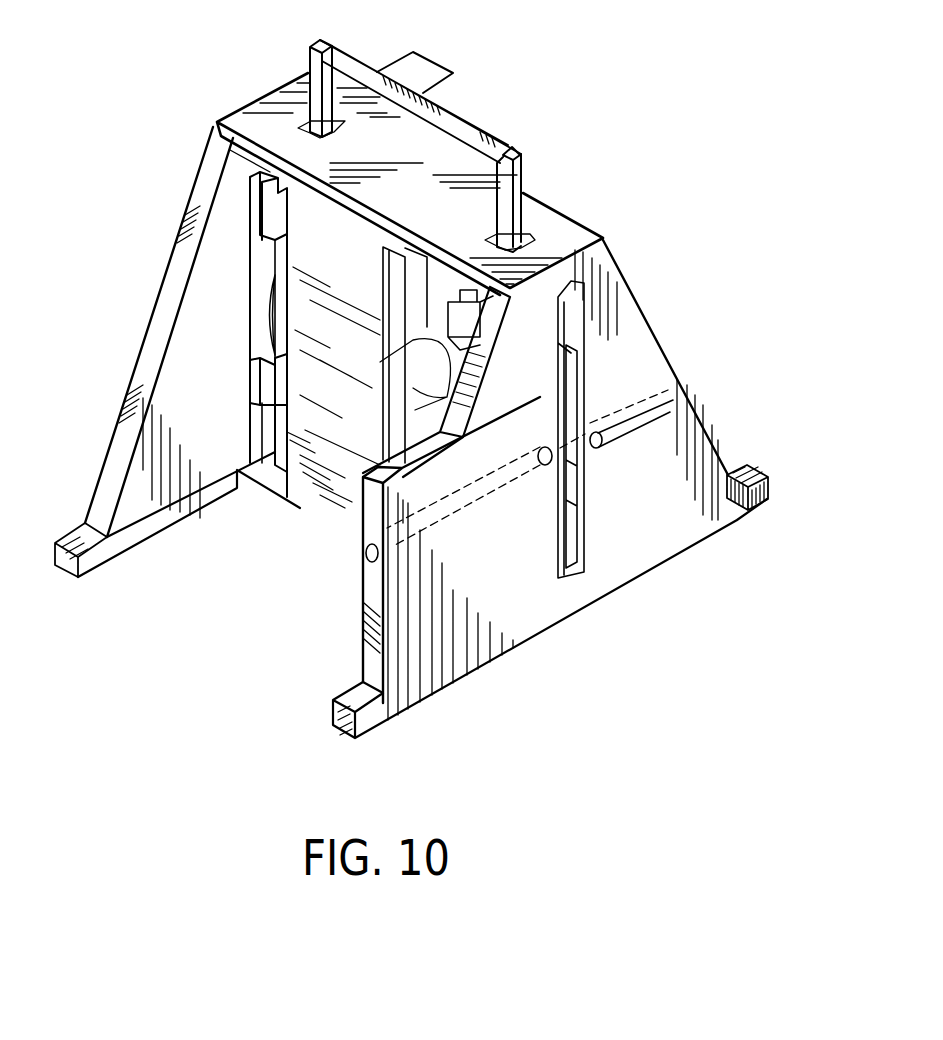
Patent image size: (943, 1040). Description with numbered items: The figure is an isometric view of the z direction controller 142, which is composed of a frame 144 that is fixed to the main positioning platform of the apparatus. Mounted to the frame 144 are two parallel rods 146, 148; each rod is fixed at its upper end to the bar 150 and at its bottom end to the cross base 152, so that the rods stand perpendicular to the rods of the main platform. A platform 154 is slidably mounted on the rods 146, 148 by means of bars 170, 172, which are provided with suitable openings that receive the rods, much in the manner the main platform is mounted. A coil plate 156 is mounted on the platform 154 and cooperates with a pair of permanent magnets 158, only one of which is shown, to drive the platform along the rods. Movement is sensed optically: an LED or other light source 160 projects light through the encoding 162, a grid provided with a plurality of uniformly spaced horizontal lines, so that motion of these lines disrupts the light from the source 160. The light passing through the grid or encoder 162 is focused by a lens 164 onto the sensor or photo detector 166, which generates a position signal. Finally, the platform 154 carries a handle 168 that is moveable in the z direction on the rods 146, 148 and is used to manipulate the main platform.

The z direction controller 142 is at (610, 253).
The frame 144 is at (150, 347).
The rod 146 is at (268, 300).
The rod 148 is at (498, 300).
The bar 150 is at (560, 232).
The cross base 152 is at (337, 538).
The platform 154 is at (470, 405).
The coil plate 156 is at (435, 402).
The permanent magnet 158 is at (297, 475).
The light source 160 is at (612, 436).
The encoding 162 is at (575, 402).
The lens 164 is at (552, 458).
The photo detector 166 is at (364, 563).
The handle 168 is at (313, 60).
The bar 170 is at (255, 190).
The bar 172 is at (270, 387).